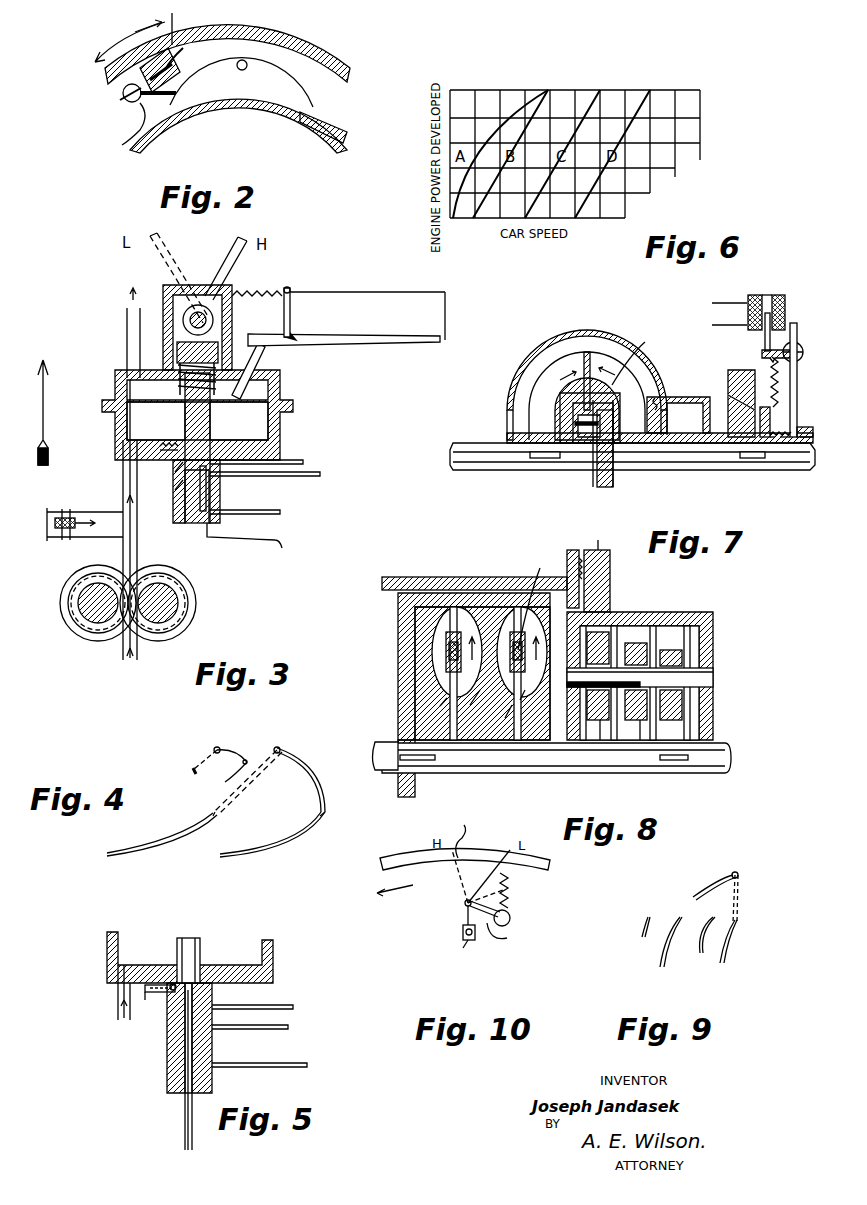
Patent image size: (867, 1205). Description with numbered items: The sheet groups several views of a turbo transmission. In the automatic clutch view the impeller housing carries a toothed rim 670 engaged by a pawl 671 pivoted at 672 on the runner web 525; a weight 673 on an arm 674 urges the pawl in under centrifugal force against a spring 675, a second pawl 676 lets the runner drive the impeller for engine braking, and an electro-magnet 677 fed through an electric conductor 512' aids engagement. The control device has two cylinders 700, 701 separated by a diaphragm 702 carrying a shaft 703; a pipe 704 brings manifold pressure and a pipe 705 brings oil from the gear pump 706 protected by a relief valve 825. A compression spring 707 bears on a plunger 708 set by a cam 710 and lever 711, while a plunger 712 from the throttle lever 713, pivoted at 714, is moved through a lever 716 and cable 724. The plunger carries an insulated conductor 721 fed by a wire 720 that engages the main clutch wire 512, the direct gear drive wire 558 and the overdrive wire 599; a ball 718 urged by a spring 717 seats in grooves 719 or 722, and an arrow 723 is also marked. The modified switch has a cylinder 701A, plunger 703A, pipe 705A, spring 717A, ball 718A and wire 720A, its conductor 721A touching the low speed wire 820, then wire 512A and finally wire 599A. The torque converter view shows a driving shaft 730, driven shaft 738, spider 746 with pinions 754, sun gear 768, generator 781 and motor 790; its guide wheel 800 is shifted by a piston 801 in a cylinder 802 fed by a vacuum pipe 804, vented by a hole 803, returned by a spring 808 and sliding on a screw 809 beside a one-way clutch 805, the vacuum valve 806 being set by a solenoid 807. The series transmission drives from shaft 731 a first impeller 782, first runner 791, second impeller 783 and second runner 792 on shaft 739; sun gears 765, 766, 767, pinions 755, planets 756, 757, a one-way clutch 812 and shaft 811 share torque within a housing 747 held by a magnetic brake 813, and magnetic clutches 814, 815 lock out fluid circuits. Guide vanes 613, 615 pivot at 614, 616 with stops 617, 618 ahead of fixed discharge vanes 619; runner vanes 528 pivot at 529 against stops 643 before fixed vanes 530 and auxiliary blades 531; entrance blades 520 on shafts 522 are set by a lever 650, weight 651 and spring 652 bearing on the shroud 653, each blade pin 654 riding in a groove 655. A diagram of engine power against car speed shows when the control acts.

In FIG. 2, the electric conductor 512' is at (194, 24).
In FIG. 2, the runner web 525 is at (348, 52).
In FIG. 2, the toothed rim 670 is at (338, 153).
In FIG. 2, the pawl 671 is at (292, 85).
In FIG. 2, the pivot 672 is at (247, 63).
In FIG. 2, the weight 673 is at (128, 100).
In FIG. 2, the arm 674 is at (112, 128).
In FIG. 2, the spring 675 is at (178, 60).
In FIG. 2, the second pawl 676 is at (176, 88).
In FIG. 2, the electro-magnet 677 is at (115, 90).
In FIG. 3, the forward cylinder 700 is at (282, 385).
In FIG. 3, the cylinder 701 is at (282, 432).
In FIG. 3, the diaphragm 702 is at (228, 418).
In FIG. 3, the shaft 703 is at (200, 435).
In FIG. 3, the pipe 704 is at (112, 333).
In FIG. 3, the pipe 705 is at (124, 492).
In FIG. 3, the gear pump 706 is at (90, 630).
In FIG. 3, the compression spring 707 is at (178, 390).
In FIG. 3, the plunger 708 is at (197, 352).
In FIG. 3, the cam 710 is at (180, 310).
In FIG. 3, the lever 711 is at (158, 263).
In FIG. 3, the plunger 712 is at (252, 348).
In FIG. 3, the throttle lever 713 is at (350, 350).
In FIG. 3, the pivot 714 is at (292, 334).
In FIG. 3, the lever 716 is at (280, 315).
In FIG. 3, the spring 717 is at (161, 463).
In FIG. 3, the ball 718 is at (162, 478).
In FIG. 3, the groove 719 is at (162, 495).
In FIG. 3, the wire 720 is at (255, 540).
In FIG. 3, the insulated conductor 721 is at (222, 498).
In FIG. 3, the groove 722 is at (182, 432).
In FIG. 3, the indicator 723 is at (47, 415).
In FIG. 3, the cable 724 is at (345, 290).
In FIG. 3, the relief valve 825 is at (47, 545).
In FIG. 3, the overdrive wire 599 is at (303, 458).
In FIG. 3, the main clutch wire 512 is at (265, 486).
In FIG. 3, the direct gear drive wire 558 is at (280, 513).
In FIG. 7, the driving shaft 730 is at (458, 470).
In FIG. 7, the driven shaft 738 is at (665, 470).
In FIG. 7, the planetary spider 746 is at (590, 450).
In FIG. 7, the planet pinions 754 is at (560, 450).
In FIG. 7, the sun gear 768 is at (550, 490).
In FIG. 7, the generating member 781 is at (642, 357).
In FIG. 7, the energy absorbing member 790 is at (548, 380).
In FIG. 7, the guide wheel 800 is at (660, 407).
In FIG. 7, the piston 801 is at (765, 445).
In FIG. 7, the cylinder 802 is at (770, 418).
In FIG. 7, the hole 803 is at (725, 370).
In FIG. 7, the pipe 804 is at (771, 382).
In FIG. 7, the one-way clutch 805 is at (808, 485).
In FIG. 7, the vacuum valve 806 is at (800, 345).
In FIG. 7, the solenoid 807 is at (784, 287).
In FIG. 7, the spring 808 is at (790, 450).
In FIG. 7, the screw 809 is at (690, 470).
In FIG. 8, the driving shaft 731 is at (388, 772).
In FIG. 8, the driven shaft 739 is at (718, 773).
In FIG. 8, the planetary housing 747 is at (712, 705).
In FIG. 8, the pinions 755 is at (609, 638).
In FIG. 8, the planets 756 is at (648, 645).
In FIG. 8, the planets 757 is at (682, 660).
In FIG. 8, the sun gear 765 is at (597, 745).
In FIG. 8, the sun gear 766 is at (636, 745).
In FIG. 8, the sun gear 767 is at (650, 683).
In FIG. 8, the first impeller 782 is at (534, 706).
In FIG. 8, the second impeller 783 is at (474, 707).
In FIG. 8, the first runner 791 is at (496, 723).
In FIG. 8, the second runner 792 is at (432, 708).
In FIG. 8, the shaft 811 is at (713, 677).
In FIG. 8, the one-way clutch 812 is at (590, 676).
In FIG. 8, the magnetic brake 813 is at (612, 590).
In FIG. 8, the magnetic clutch 814 is at (522, 602).
In FIG. 8, the magnetic clutch 815 is at (449, 647).
In FIG. 4, the long semi-free flexible vanes 613 is at (318, 770).
In FIG. 4, the pivot 614 is at (280, 746).
In FIG. 4, the short semi-free flexible vanes 615 is at (220, 746).
In FIG. 4, the pivot 616 is at (212, 748).
In FIG. 4, the stop pin 617 is at (227, 771).
In FIG. 4, the stop pin 618 is at (192, 770).
In FIG. 4, the fixed discharge vanes 619 is at (312, 832).
In FIG. 10, the entrance blades 520 is at (455, 870).
In FIG. 10, the small shaft 522 is at (464, 903).
In FIG. 10, the lever 650 is at (510, 935).
In FIG. 10, the weight 651 is at (512, 918).
In FIG. 10, the spring 652 is at (515, 900).
In FIG. 10, the impeller shroud 653 is at (474, 837).
In FIG. 10, the pin 654 is at (462, 930).
In FIG. 10, the groove 655 is at (443, 950).
In FIG. 9, the semi-free flexible vanes 528 is at (740, 862).
In FIG. 9, the pivot 529 is at (738, 873).
In FIG. 9, the long fixed vanes 530 is at (738, 935).
In FIG. 9, the short auxiliary blades 531 is at (678, 946).
In FIG. 9, the stop pin 643 is at (697, 890).
In FIG. 5, the cylinder 701A is at (273, 975).
In FIG. 5, the plunger 703A is at (200, 943).
In FIG. 5, the pipe 705A is at (117, 1007).
In FIG. 5, the spring 717A is at (148, 996).
In FIG. 5, the ball 718A is at (172, 985).
In FIG. 5, the wire 720A is at (184, 1120).
In FIG. 5, the conductor 721A is at (212, 1050).
In FIG. 5, the overdrive clutch wire 599A is at (293, 1007).
In FIG. 5, the turbo-transmission clutch wire 512A is at (288, 1027).
In FIG. 5, the low gear speed clutch wire 820 is at (307, 1065).